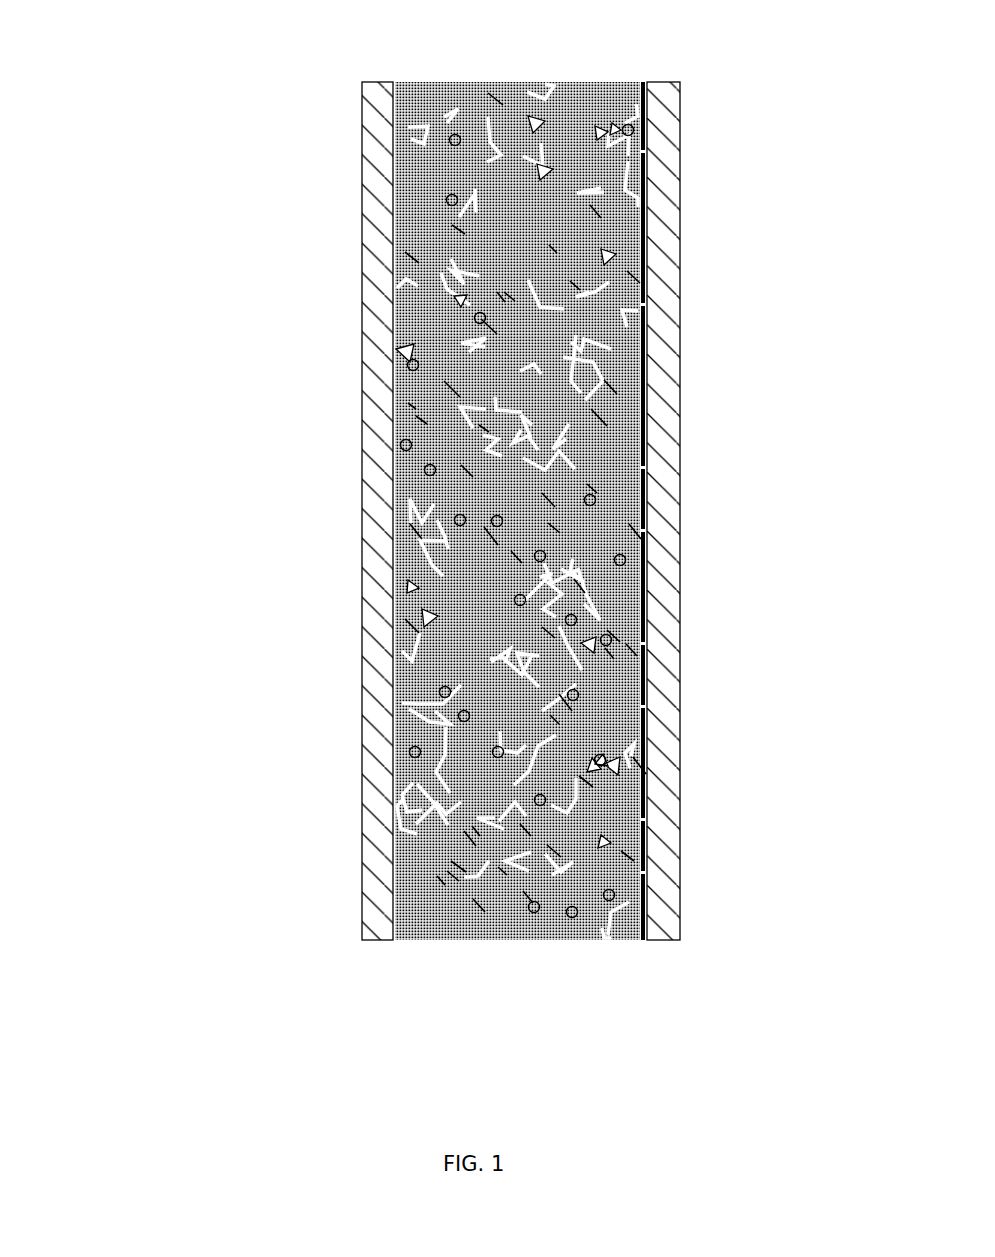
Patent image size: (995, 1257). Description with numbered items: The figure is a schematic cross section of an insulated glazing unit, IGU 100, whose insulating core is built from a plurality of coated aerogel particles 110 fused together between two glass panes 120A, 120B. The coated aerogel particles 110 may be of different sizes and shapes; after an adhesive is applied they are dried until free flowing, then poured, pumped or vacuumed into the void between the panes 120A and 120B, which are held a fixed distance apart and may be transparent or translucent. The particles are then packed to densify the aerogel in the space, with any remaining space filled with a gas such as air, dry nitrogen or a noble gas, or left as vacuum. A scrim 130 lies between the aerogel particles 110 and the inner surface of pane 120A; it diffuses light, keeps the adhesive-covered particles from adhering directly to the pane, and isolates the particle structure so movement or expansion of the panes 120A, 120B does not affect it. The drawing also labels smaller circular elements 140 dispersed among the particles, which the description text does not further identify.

The IGU 100 is at (447, 515).
The coated aerogel particles 110 is at (590, 80).
The glass pane 120A is at (662, 308).
The glass pane 120B is at (377, 360).
The scrim 130 is at (643, 80).
The conductive additive particles 140 is at (455, 137).